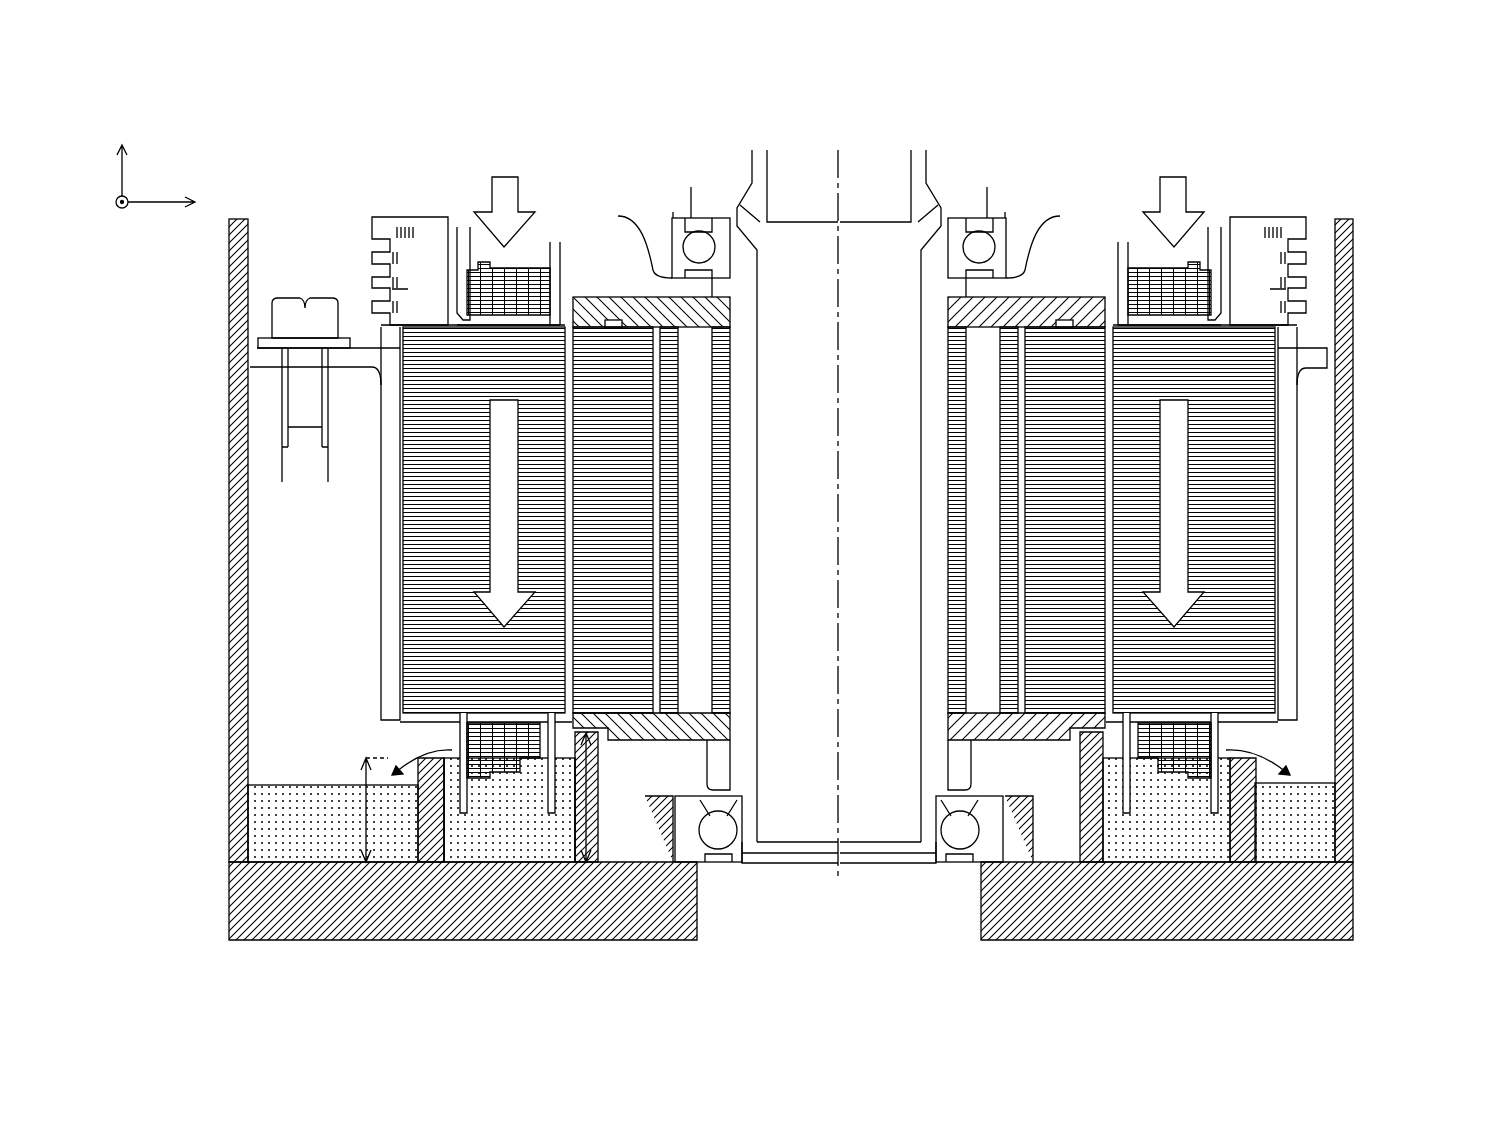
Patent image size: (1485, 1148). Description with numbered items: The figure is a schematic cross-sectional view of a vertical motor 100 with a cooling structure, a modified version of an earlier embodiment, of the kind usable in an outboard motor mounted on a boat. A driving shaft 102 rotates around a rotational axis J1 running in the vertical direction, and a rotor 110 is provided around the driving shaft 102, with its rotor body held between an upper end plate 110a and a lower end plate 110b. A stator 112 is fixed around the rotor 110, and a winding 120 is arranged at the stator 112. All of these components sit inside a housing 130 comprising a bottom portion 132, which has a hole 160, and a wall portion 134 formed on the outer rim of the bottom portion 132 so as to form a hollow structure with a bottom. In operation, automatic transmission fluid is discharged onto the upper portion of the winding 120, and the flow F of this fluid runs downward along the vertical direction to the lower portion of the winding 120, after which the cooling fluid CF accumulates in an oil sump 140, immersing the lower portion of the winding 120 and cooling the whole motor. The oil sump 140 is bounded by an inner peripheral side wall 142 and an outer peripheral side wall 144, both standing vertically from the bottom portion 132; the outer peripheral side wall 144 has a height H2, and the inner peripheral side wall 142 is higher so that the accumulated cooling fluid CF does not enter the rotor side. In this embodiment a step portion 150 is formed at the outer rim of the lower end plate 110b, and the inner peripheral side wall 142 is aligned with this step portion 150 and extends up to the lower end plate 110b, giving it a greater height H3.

The vertical motor 100 is at (1450, 180).
The driving shaft 102 is at (886, 822).
The rotor 110 is at (788, 520).
The upper end plate 110a is at (705, 308).
The lower end plate 110b is at (700, 724).
The stator 112 is at (440, 512).
The winding 120 is at (537, 265).
The housing 130 is at (790, 579).
The bottom portion 132 is at (229, 898).
The wall portion 134 is at (229, 325).
The oil sump 140 is at (492, 830).
The inner peripheral side wall 142 is at (595, 808).
The outer peripheral side wall 144 is at (431, 820).
The step portion 150 is at (640, 730).
The hole 160 is at (799, 890).
The cooling fluid CF is at (310, 820).
The flow of the cooling fluid F is at (505, 175).
The height of the outer peripheral side wall H2 is at (380, 810).
The height of the inner peripheral side wall H3 is at (596, 781).
The rotational axis J1 is at (837, 496).